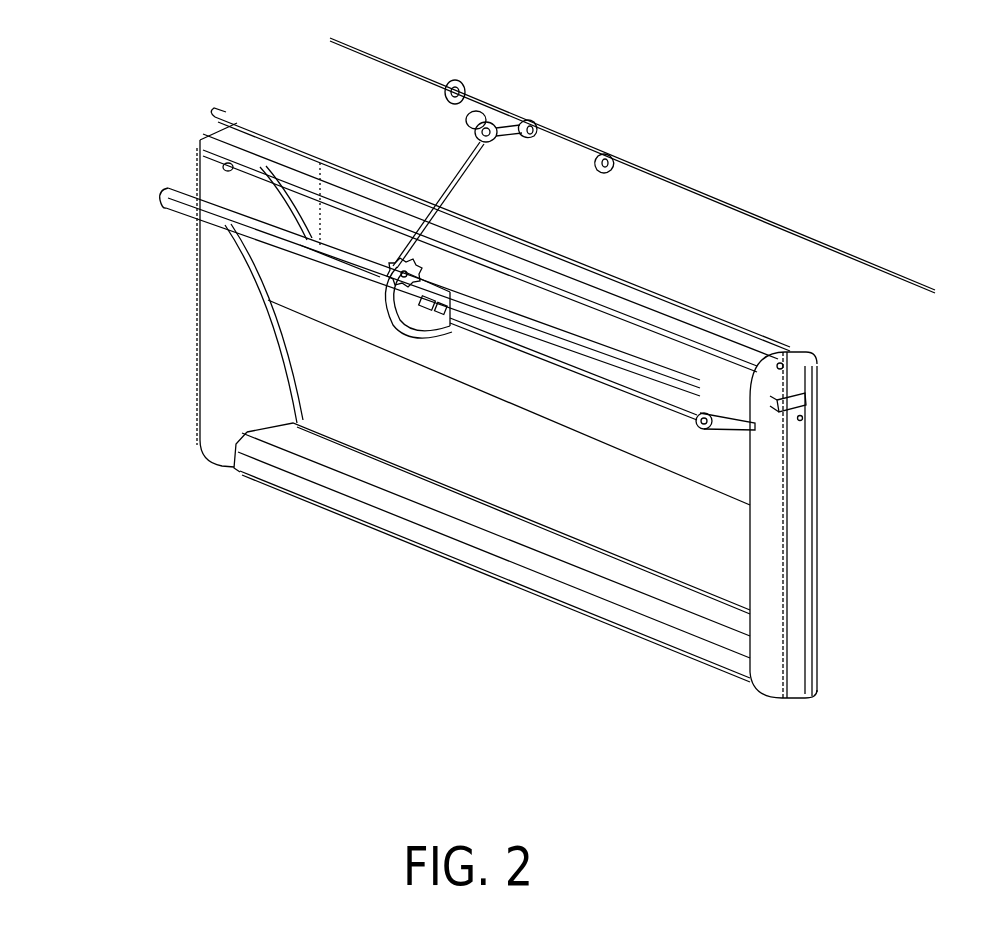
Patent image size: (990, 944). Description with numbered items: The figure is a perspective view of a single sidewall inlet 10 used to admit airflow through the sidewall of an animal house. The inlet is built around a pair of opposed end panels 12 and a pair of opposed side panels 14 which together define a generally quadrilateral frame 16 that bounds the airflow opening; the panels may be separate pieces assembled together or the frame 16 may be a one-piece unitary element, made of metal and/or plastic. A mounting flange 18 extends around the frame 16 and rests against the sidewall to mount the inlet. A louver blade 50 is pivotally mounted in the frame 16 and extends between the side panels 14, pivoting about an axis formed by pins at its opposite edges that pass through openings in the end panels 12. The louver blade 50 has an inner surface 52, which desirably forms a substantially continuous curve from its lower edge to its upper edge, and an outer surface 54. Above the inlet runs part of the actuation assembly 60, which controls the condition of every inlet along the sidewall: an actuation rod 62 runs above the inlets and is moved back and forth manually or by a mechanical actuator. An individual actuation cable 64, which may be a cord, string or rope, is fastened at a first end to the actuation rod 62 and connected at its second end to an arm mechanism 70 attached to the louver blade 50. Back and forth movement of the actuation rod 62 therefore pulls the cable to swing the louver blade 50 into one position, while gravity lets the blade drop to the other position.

The sidewall inlet 10 is at (150, 120).
The end panels 12 is at (236, 334).
The side panels 14 is at (684, 334).
The frame 16 is at (436, 634).
The flange 18 is at (300, 145).
The louver blade 50 is at (517, 473).
The inner surface 52 is at (660, 442).
The outer surface 54 is at (562, 332).
The actuation assembly 60 is at (708, 155).
The actuation rod 62 is at (822, 252).
The actuation cable 64 is at (447, 180).
The arm mechanism 70 is at (352, 322).